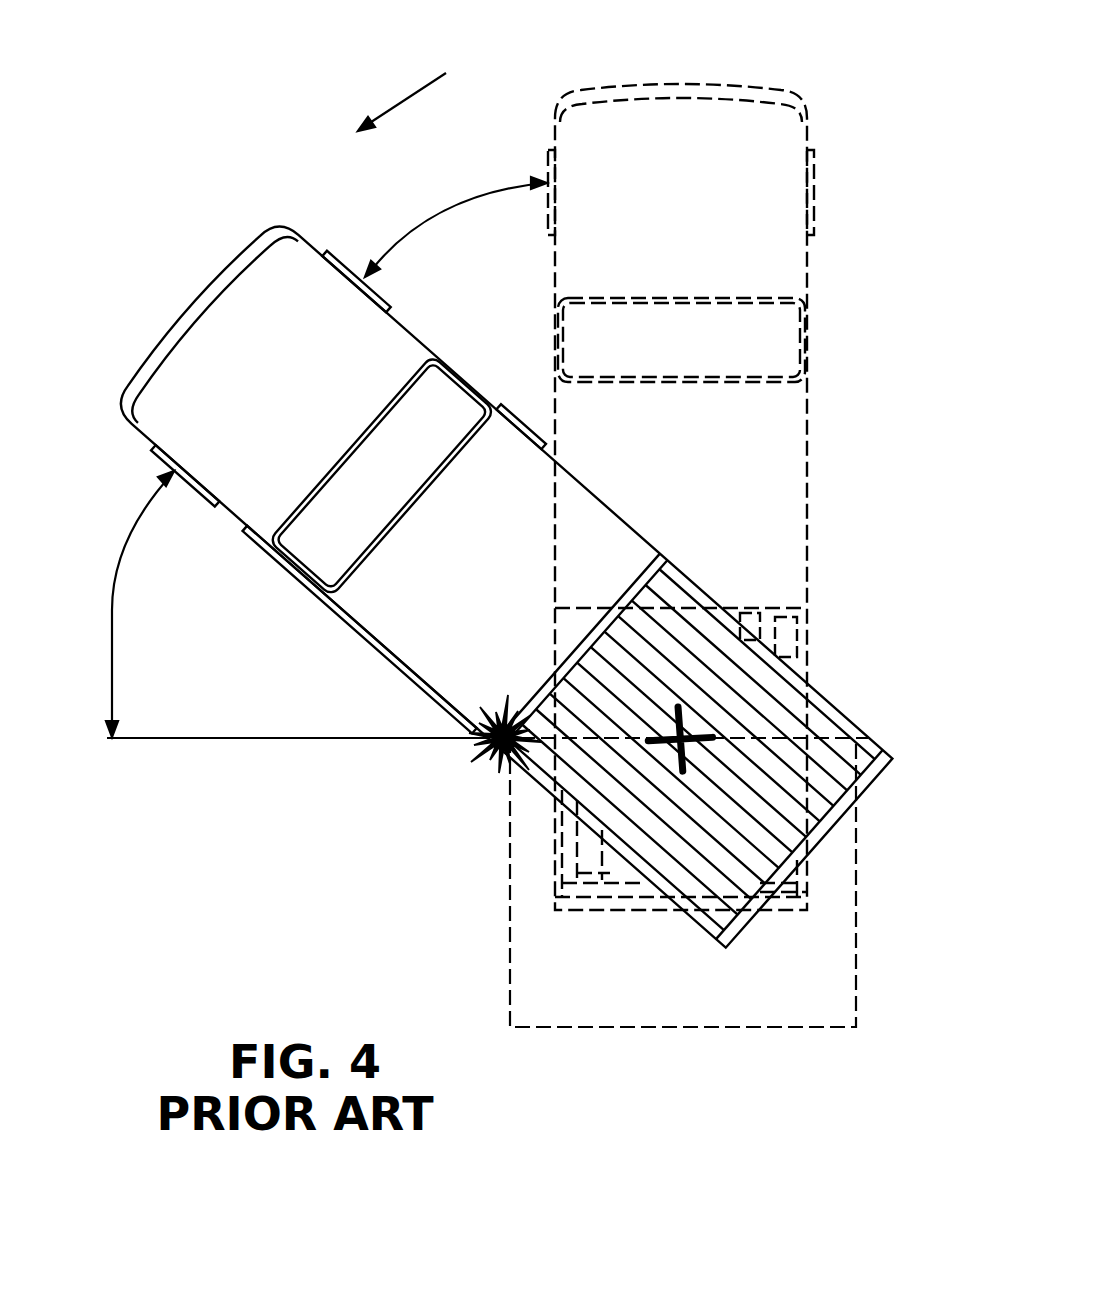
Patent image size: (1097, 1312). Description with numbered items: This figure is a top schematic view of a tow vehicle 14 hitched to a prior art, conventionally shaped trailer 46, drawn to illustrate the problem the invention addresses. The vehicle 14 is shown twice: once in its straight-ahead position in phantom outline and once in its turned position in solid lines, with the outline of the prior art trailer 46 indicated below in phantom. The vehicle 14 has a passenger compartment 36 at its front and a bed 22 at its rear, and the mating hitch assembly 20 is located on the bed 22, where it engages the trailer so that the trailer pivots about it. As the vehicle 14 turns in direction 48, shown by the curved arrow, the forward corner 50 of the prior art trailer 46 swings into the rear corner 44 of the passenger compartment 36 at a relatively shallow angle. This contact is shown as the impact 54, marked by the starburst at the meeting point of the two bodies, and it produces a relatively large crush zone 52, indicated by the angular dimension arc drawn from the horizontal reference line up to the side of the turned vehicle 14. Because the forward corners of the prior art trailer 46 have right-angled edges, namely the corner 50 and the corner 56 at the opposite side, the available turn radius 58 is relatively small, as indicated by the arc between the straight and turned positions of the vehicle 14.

The vehicle 14 is at (228, 232).
The mating hitch assembly 20 is at (686, 706).
The bed 22 is at (690, 617).
The passenger compartment 36 is at (756, 452).
The rear corner 44 is at (515, 708).
The prior art trailer 46 is at (688, 1040).
The direction 48 is at (402, 77).
The corner 50 is at (485, 765).
The crush zone 52 is at (110, 597).
The impact 54 is at (482, 760).
The corner 56 is at (862, 742).
The turn radius 58 is at (446, 205).